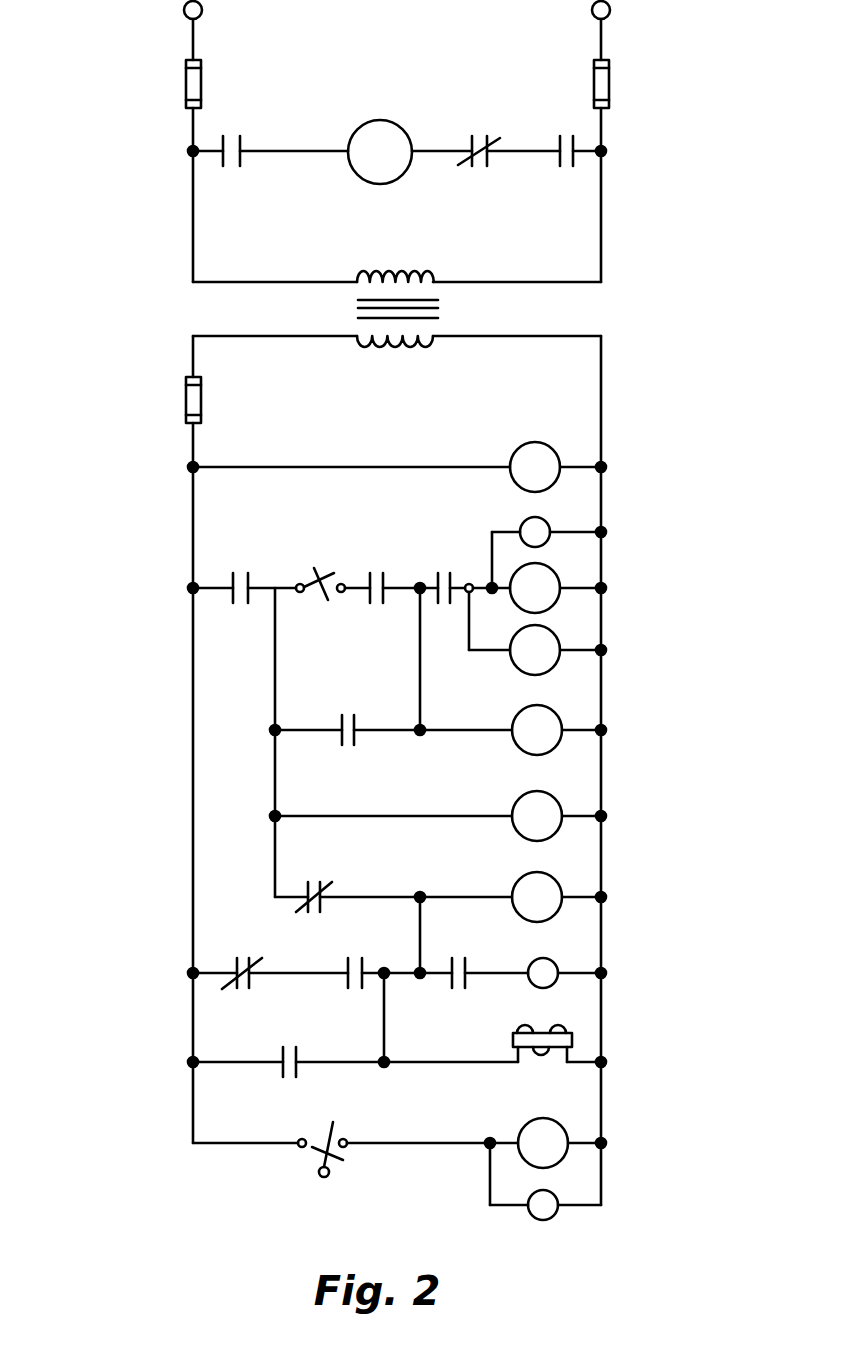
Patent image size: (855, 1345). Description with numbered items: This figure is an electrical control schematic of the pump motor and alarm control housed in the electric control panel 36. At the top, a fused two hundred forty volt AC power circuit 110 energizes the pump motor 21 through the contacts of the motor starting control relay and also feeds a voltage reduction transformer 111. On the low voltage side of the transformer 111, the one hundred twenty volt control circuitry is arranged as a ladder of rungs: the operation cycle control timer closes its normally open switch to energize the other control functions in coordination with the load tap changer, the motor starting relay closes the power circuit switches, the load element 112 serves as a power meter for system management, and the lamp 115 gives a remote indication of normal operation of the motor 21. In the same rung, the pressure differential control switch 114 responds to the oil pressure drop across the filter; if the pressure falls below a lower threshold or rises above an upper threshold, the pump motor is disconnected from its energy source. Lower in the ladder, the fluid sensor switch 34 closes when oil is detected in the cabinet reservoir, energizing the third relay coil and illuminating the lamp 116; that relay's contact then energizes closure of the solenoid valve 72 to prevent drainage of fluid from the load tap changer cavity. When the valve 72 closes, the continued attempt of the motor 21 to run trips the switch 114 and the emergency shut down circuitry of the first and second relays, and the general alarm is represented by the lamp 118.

The power circuit 110 is at (617, 207).
The electric motor 21 is at (397, 122).
The voltage reduction transformer 111 is at (443, 308).
The electric control panel 36 is at (166, 661).
The pressure differential control switch 114 is at (329, 580).
The lamp 115 is at (518, 528).
The load element 112 is at (555, 588).
The lamp 118 is at (534, 986).
The solenoid valve 72 is at (528, 1049).
The fluid sensor switch 34 is at (324, 1137).
The lamp 116 is at (528, 1215).